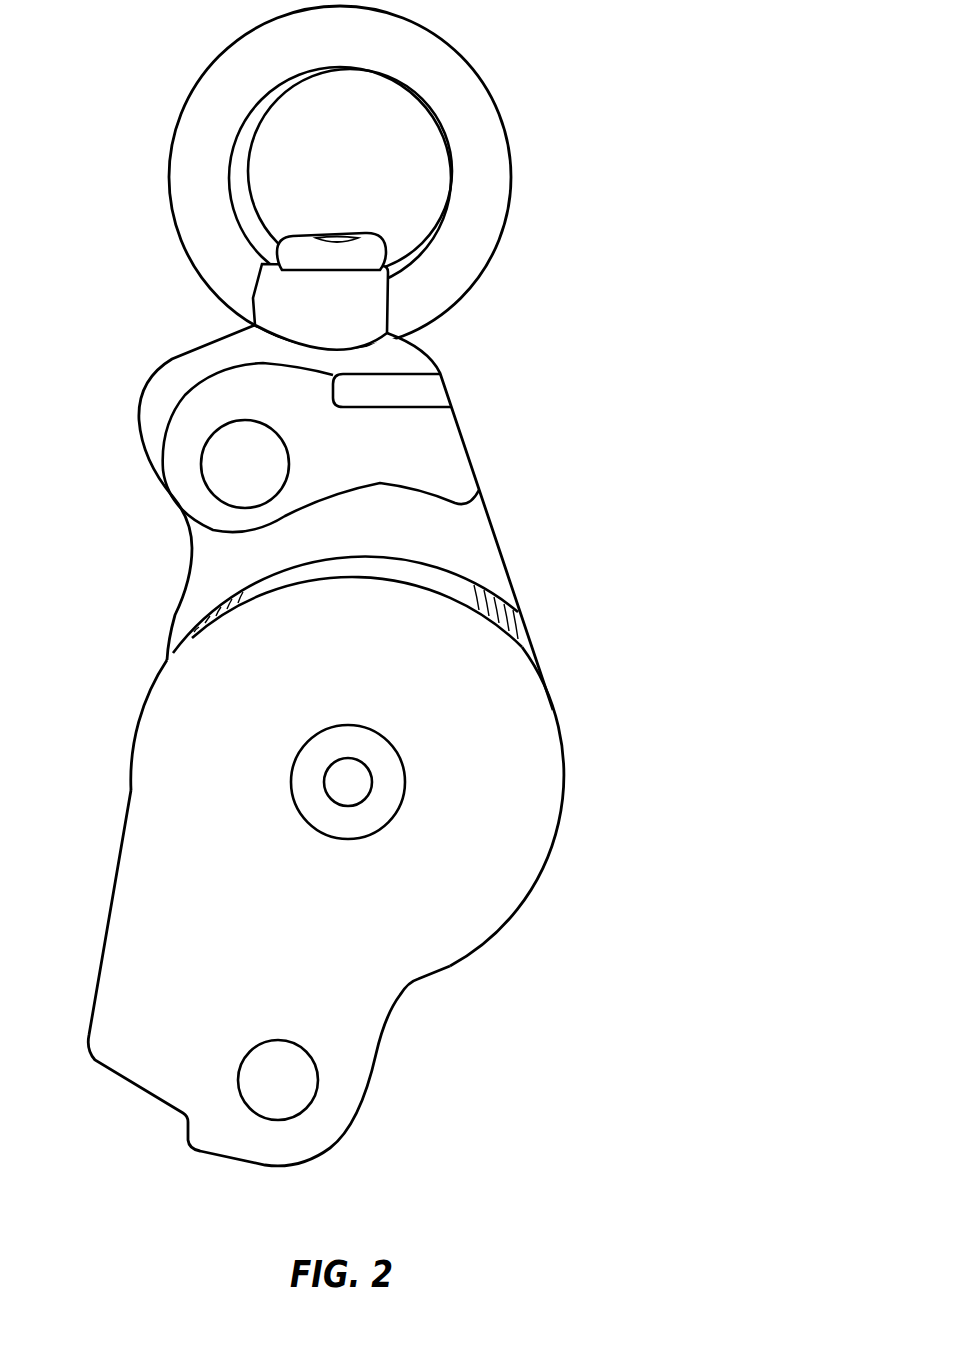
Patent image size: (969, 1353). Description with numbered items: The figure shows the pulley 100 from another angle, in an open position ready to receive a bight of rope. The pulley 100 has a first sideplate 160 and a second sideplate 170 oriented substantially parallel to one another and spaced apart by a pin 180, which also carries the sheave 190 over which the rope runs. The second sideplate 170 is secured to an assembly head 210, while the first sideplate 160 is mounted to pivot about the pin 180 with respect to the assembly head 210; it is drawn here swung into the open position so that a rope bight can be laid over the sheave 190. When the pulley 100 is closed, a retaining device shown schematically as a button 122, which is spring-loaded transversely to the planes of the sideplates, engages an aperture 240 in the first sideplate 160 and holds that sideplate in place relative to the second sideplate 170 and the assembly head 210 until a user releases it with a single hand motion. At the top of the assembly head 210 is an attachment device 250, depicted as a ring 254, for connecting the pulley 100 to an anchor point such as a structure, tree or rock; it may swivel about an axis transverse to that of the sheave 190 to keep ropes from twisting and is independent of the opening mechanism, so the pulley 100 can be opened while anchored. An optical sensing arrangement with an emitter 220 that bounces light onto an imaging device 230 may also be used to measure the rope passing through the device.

The pulley 100 is at (423, 612).
The button 122 is at (240, 470).
The first sideplate 160 is at (415, 761).
The second sideplate 170 is at (457, 550).
The pin 180 is at (353, 781).
The sheave 190 is at (507, 607).
The assembly head 210 is at (335, 517).
The emitter 220 is at (273, 1004).
The imaging device 230 is at (417, 390).
The aperture 240 is at (288, 1079).
The attachment device 250 is at (423, 178).
The ring 254 is at (469, 104).